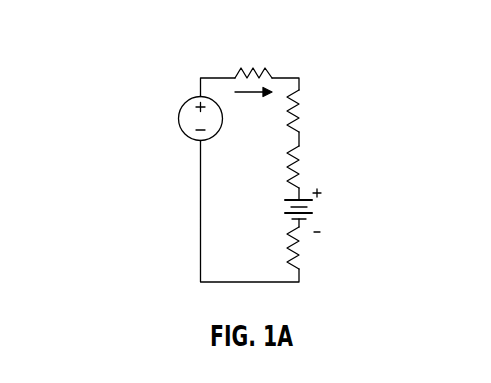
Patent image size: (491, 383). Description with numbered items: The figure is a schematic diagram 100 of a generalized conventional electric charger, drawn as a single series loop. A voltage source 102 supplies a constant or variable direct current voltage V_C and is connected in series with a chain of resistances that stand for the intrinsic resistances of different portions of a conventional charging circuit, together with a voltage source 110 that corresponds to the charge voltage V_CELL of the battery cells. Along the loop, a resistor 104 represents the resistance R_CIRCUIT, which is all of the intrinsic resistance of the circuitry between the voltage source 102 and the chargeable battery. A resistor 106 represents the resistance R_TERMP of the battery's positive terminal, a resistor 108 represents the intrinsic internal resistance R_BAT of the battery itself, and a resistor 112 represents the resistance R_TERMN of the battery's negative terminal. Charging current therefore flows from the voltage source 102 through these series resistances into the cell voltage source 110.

The schematic diagram 100 is at (116, 23).
The voltage source 102 is at (193, 97).
The resistor 104 is at (255, 42).
The resistor 106 is at (313, 103).
The resistor 108 is at (332, 165).
The voltage source 110 is at (355, 207).
The resistor 112 is at (362, 250).